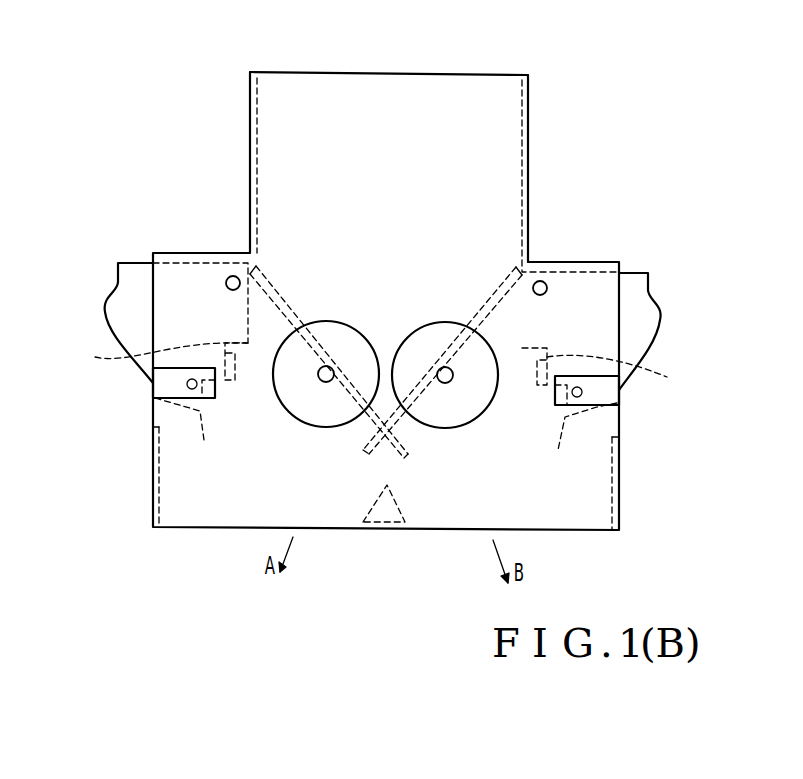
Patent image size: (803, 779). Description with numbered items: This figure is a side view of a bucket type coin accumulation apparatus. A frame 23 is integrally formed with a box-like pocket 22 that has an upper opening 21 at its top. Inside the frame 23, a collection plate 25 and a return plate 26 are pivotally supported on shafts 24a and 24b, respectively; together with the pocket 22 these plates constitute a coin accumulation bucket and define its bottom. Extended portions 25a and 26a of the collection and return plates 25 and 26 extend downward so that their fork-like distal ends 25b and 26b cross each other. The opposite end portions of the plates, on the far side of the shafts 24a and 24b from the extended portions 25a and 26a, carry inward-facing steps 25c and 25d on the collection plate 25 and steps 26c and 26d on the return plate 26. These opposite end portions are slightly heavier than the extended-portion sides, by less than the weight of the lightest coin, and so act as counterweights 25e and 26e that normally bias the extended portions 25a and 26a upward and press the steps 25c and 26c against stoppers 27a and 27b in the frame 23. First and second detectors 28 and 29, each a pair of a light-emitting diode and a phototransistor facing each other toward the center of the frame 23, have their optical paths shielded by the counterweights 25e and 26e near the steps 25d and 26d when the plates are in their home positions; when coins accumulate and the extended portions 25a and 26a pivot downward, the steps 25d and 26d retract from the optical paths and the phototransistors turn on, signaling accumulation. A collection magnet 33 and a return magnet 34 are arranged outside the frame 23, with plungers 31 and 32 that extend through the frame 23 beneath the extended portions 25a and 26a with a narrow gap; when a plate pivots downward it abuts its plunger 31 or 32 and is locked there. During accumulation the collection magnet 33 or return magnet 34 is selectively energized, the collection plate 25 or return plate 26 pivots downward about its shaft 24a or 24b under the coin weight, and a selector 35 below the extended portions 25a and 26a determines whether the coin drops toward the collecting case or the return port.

The upper opening 21 is at (297, 72).
The box-like pocket 22 is at (529, 124).
The frame 23 is at (493, 506).
The shaft 24a is at (233, 276).
The shaft 24b is at (543, 281).
The collection plate 25 is at (127, 313).
The extended portion 25a is at (292, 312).
The fork-like distal end 25b is at (410, 458).
The step 25c is at (154, 355).
The step 25d is at (187, 428).
The counterweight 25e is at (133, 263).
The return plate 26 is at (625, 318).
The extended portion 26a is at (477, 313).
The fork-like distal end 26b is at (362, 447).
The step 26c is at (625, 372).
The step 26d is at (580, 432).
The counterweight 26e is at (636, 272).
The stopper 27a is at (235, 367).
The stopper 27b is at (536, 372).
The first detector 28 is at (174, 382).
The second detector 29 is at (597, 392).
The plunger 31 is at (318, 368).
The plunger 32 is at (453, 370).
The collection magnet 33 is at (348, 321).
The return magnet 34 is at (428, 322).
The selector 35 is at (372, 522).